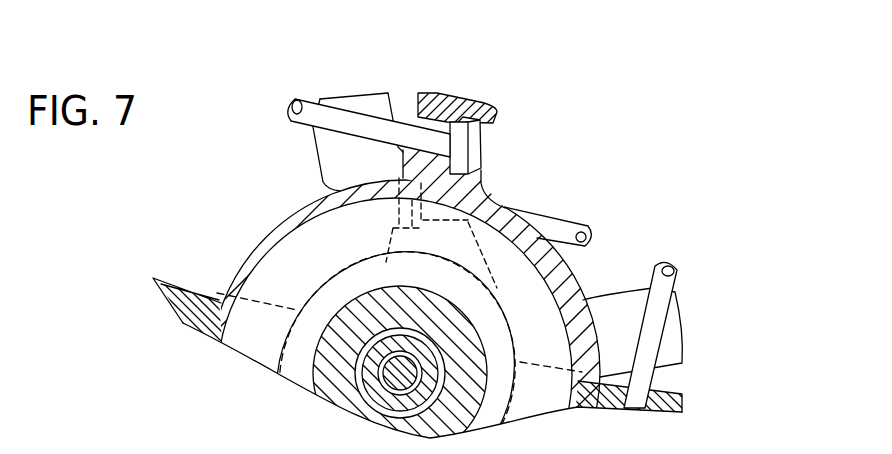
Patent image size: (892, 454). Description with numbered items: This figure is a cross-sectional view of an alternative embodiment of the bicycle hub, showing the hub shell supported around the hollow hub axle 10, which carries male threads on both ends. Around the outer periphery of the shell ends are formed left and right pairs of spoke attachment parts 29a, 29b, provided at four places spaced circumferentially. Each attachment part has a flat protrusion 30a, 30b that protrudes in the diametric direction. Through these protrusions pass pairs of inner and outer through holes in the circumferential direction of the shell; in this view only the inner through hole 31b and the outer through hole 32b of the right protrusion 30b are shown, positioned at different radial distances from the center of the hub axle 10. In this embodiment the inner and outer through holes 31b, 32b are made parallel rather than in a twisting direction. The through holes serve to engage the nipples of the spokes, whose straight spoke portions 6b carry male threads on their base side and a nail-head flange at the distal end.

The straight spoke portion 6b is at (317, 108).
The hub axle 10 is at (398, 379).
The spoke attachment part 29a is at (360, 93).
The spoke attachment part 29b is at (450, 93).
The flat protrusion 30a is at (380, 100).
The flat protrusion 30b is at (160, 277).
The inner through hole 31b is at (495, 284).
The outer through hole 32b is at (478, 119).